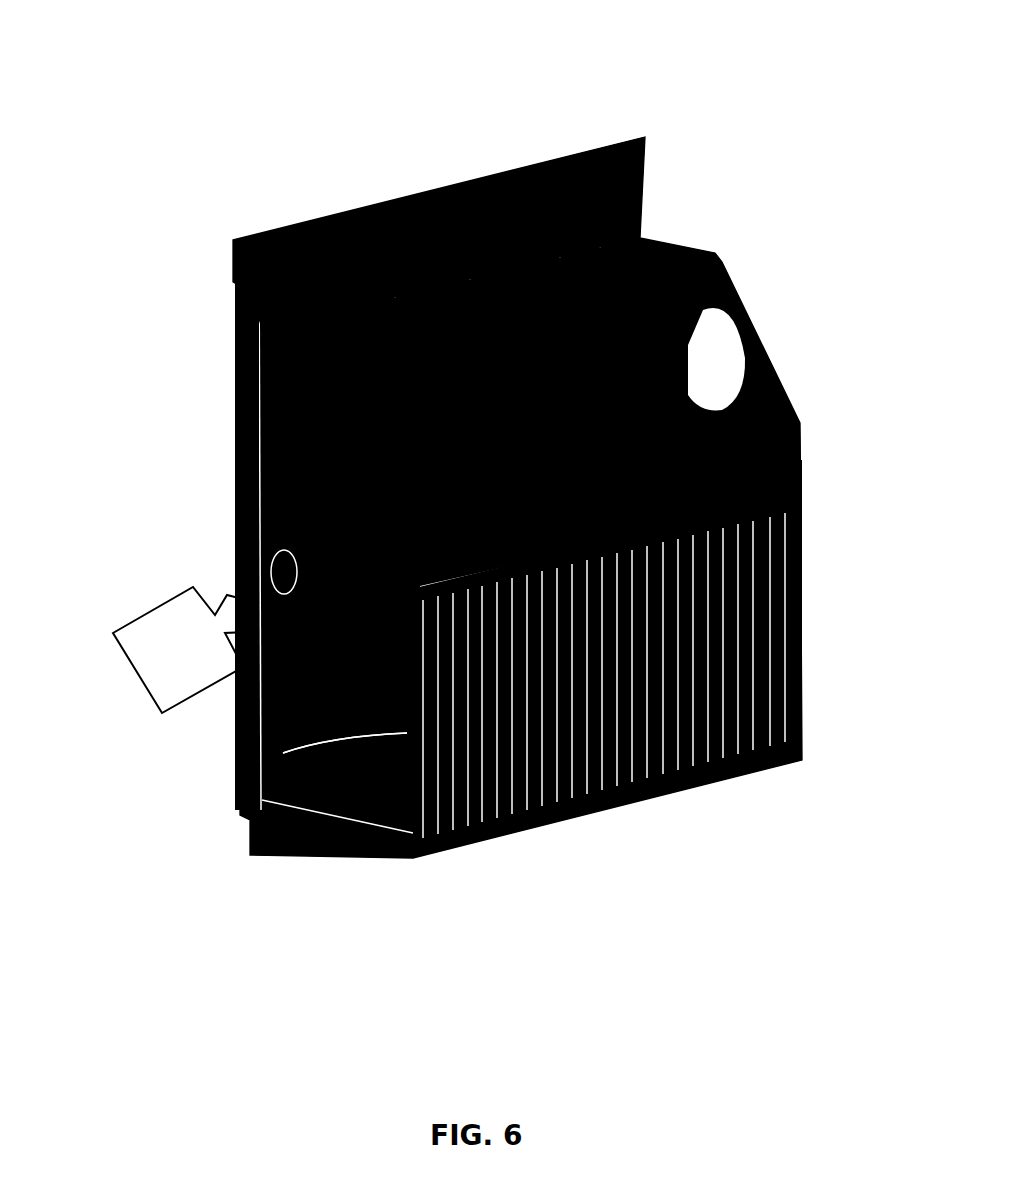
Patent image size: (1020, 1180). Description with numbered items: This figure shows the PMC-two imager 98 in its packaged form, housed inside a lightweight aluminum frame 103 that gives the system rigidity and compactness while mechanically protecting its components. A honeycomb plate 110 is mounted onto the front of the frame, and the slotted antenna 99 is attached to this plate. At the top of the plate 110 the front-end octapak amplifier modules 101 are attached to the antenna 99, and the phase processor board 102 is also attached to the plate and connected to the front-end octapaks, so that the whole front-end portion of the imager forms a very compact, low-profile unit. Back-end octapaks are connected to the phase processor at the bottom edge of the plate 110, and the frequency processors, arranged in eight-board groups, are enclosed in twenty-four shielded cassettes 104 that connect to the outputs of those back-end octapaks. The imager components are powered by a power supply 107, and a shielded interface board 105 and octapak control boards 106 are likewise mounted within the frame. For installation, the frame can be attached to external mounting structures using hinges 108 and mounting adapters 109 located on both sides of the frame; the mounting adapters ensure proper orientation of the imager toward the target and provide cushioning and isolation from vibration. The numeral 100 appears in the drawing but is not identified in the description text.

The PMC-2 imager 98 is at (190, 197).
The slotted antenna 99 is at (240, 430).
The base foot 100 is at (242, 818).
The front-end octapak amplifier modules 101 is at (393, 200).
The phase processor board 102 is at (623, 138).
The lightweight aluminum frame 103 is at (303, 858).
The shielded cassettes 104 is at (697, 783).
The shielded interface board 105 is at (795, 466).
The octapak control boards 106 is at (660, 365).
The power supply 107 is at (663, 242).
The hinges 108 is at (260, 565).
The mounting adapters 109 is at (170, 668).
The honeycomb plate 110 is at (240, 730).